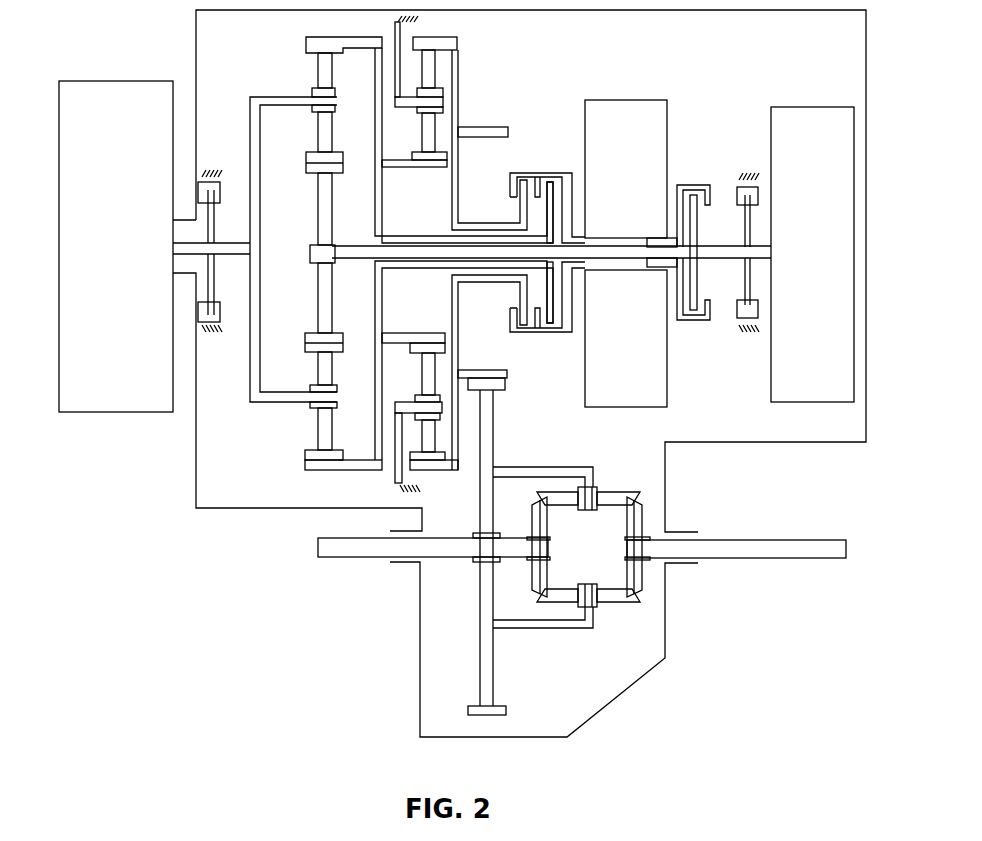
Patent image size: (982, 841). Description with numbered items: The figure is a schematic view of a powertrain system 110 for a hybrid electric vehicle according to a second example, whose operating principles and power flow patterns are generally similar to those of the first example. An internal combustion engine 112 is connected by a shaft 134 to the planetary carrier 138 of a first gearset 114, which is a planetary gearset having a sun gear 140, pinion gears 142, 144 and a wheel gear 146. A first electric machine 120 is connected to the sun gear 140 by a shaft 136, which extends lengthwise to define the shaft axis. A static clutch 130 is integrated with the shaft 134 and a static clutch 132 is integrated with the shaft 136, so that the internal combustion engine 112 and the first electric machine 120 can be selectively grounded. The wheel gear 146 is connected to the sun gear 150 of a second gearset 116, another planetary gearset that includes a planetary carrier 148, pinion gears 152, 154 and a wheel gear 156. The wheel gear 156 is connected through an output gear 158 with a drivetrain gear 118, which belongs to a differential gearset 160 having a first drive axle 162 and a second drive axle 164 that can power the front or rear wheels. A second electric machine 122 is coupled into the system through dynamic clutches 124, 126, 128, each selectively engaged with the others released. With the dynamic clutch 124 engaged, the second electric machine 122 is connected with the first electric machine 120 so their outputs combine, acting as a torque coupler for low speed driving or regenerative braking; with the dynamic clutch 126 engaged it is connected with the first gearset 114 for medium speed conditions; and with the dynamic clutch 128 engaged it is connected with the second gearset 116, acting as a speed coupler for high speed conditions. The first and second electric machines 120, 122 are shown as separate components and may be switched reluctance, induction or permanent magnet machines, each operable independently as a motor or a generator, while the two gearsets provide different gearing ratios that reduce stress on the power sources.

The powertrain system 110 is at (237, 685).
The internal combustion engine 112 is at (123, 403).
The first gearset 114 is at (317, 33).
The second gearset 116 is at (441, 34).
The drivetrain gear 118 is at (477, 700).
The first electric machine 120 is at (812, 112).
The second electric machine 122 is at (628, 102).
The dynamic clutch 124 is at (698, 167).
The dynamic clutch 126 is at (546, 163).
The dynamic clutch 128 is at (524, 167).
The static clutch 130 is at (208, 163).
The static clutch 132 is at (742, 167).
The shaft 134 is at (183, 248).
The shaft 136 is at (355, 253).
The planetary carrier 138 is at (275, 92).
The sun gear 140 is at (313, 328).
The pinion gear 142 is at (308, 152).
The pinion gear 144 is at (308, 447).
The wheel gear 146 is at (357, 453).
The planetary carrier 148 is at (397, 48).
The sun gear 150 is at (427, 330).
The pinion gear 152 is at (420, 150).
The pinion gear 154 is at (418, 388).
The wheel gear 156 is at (430, 477).
The output gear 158 is at (488, 125).
The differential gearset 160 is at (585, 638).
The first drive axle 162 is at (362, 548).
The second drive axle 164 is at (763, 548).